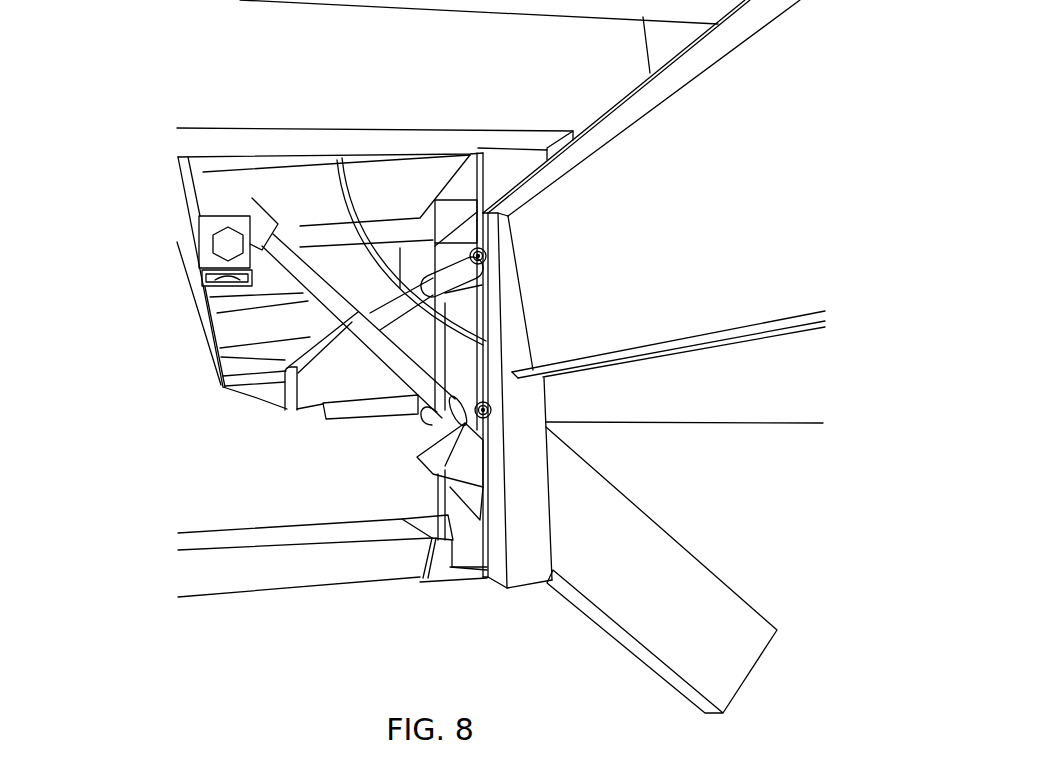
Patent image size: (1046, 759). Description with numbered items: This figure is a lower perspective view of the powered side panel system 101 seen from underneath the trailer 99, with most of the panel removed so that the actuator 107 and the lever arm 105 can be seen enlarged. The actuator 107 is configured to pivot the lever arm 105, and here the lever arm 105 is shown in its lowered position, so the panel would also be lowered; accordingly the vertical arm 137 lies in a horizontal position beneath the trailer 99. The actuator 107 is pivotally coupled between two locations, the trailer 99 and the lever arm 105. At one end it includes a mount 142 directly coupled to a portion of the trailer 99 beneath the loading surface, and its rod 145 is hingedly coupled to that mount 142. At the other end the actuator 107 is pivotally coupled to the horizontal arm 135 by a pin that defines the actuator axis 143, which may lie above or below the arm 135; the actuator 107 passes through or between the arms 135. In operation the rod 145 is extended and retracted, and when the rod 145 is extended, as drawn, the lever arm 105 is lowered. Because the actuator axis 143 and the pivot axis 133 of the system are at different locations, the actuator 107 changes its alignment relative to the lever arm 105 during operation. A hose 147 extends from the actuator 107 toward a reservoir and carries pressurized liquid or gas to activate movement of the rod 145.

The trailer 99 is at (233, 78).
The hose 147 is at (347, 180).
The mount 142 is at (203, 233).
The rod 145 is at (370, 342).
The pivot axis 133 is at (487, 253).
The actuator axis 143 is at (497, 412).
The horizontal arm 135 is at (447, 503).
The vertical arm 137 is at (270, 520).
The actuator 107 is at (627, 599).
The powered side panel system 101 is at (124, 482).
The lever arm 105 is at (350, 602).